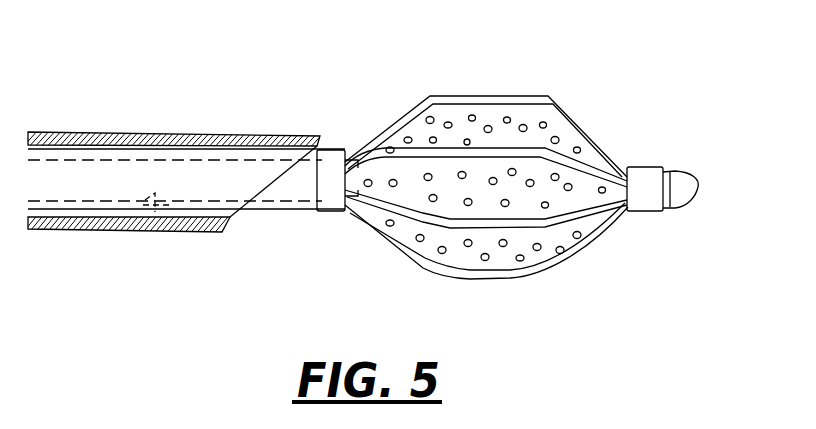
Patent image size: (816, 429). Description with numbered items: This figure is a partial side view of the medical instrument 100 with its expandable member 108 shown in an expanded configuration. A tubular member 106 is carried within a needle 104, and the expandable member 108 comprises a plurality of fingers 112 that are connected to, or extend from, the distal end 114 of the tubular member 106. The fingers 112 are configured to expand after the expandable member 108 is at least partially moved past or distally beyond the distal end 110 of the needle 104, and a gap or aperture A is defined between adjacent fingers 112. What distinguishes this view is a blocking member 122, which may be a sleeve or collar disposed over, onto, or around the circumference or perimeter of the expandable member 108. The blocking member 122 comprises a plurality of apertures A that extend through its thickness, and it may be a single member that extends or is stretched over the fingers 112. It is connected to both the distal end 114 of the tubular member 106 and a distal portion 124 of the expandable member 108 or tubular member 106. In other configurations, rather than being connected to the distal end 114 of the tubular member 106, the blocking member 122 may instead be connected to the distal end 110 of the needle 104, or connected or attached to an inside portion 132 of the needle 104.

The medical instrument 100 is at (286, 60).
The needle 104 is at (52, 228).
The tubular member 106 is at (277, 208).
The expandable member 108 is at (498, 190).
The distal end of the needle 110 is at (234, 221).
The fingers 112 is at (483, 128).
The distal end of the tubular member 114 is at (370, 181).
The blocking member 122 is at (412, 187).
The distal portion of the expandable member 124 is at (675, 190).
The inside portion of the needle 132 is at (162, 233).
The apertures A is at (522, 125).